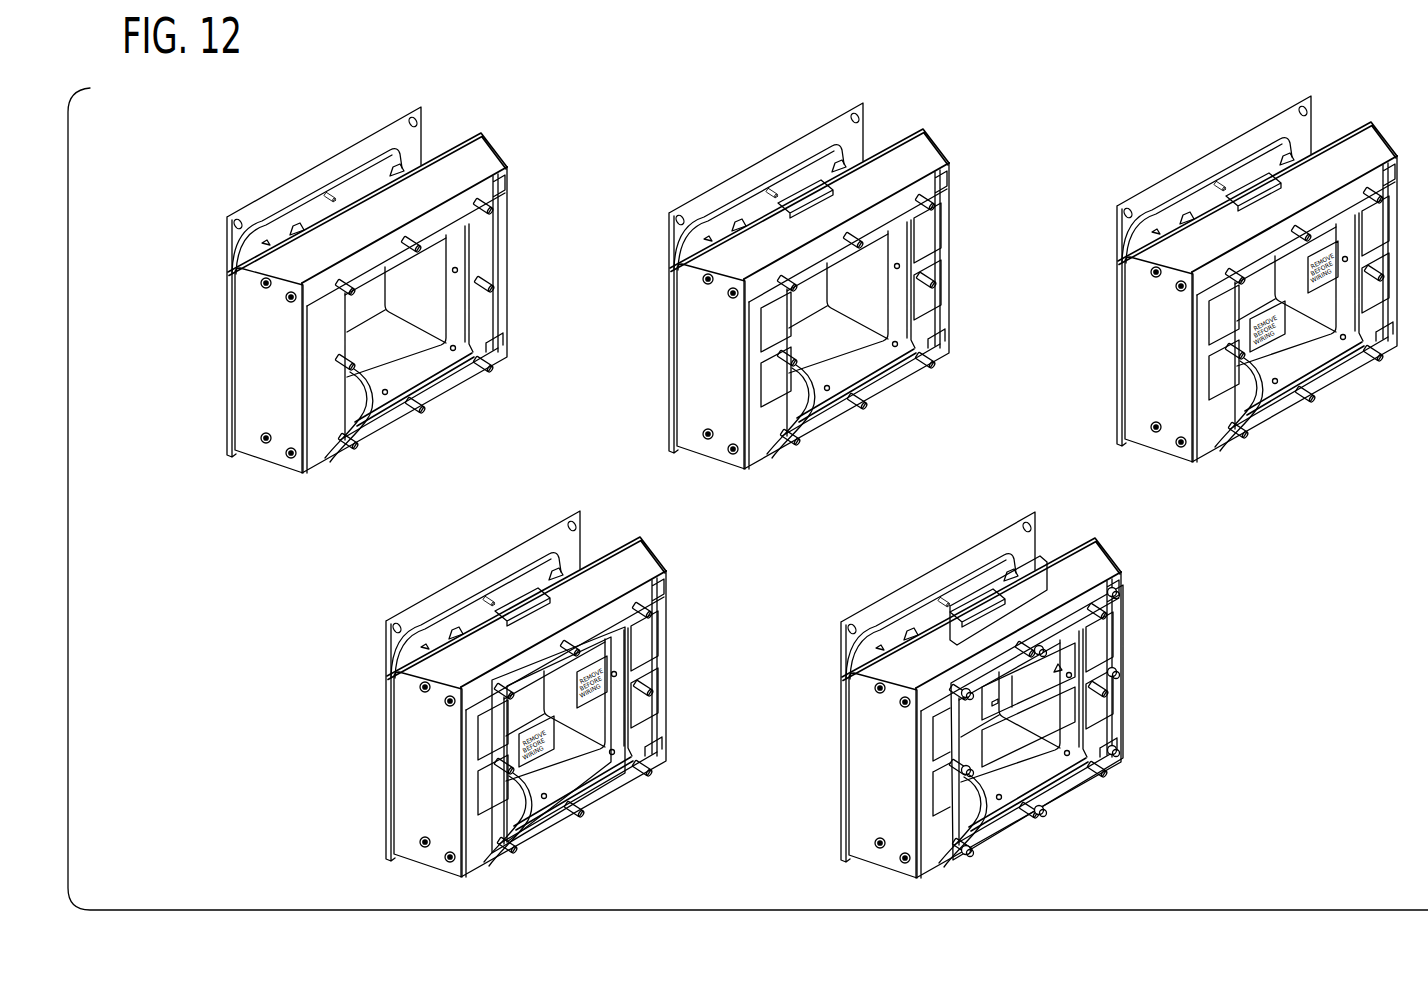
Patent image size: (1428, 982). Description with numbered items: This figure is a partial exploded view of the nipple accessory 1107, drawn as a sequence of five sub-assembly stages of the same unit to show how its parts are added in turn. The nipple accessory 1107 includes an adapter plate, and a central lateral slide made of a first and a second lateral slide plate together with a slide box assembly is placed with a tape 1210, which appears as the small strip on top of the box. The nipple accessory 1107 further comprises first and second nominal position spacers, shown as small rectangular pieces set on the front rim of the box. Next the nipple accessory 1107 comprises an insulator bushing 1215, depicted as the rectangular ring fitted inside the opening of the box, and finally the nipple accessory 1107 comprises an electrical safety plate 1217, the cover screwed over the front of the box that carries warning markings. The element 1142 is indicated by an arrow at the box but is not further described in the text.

The nipple accessory 1107 is at (355, 288).
The mounting frame 1142 is at (503, 136).
The tape 1210 is at (767, 170).
The insulator bushing 1215 is at (622, 740).
The electrical safety plate 1217 is at (1052, 708).